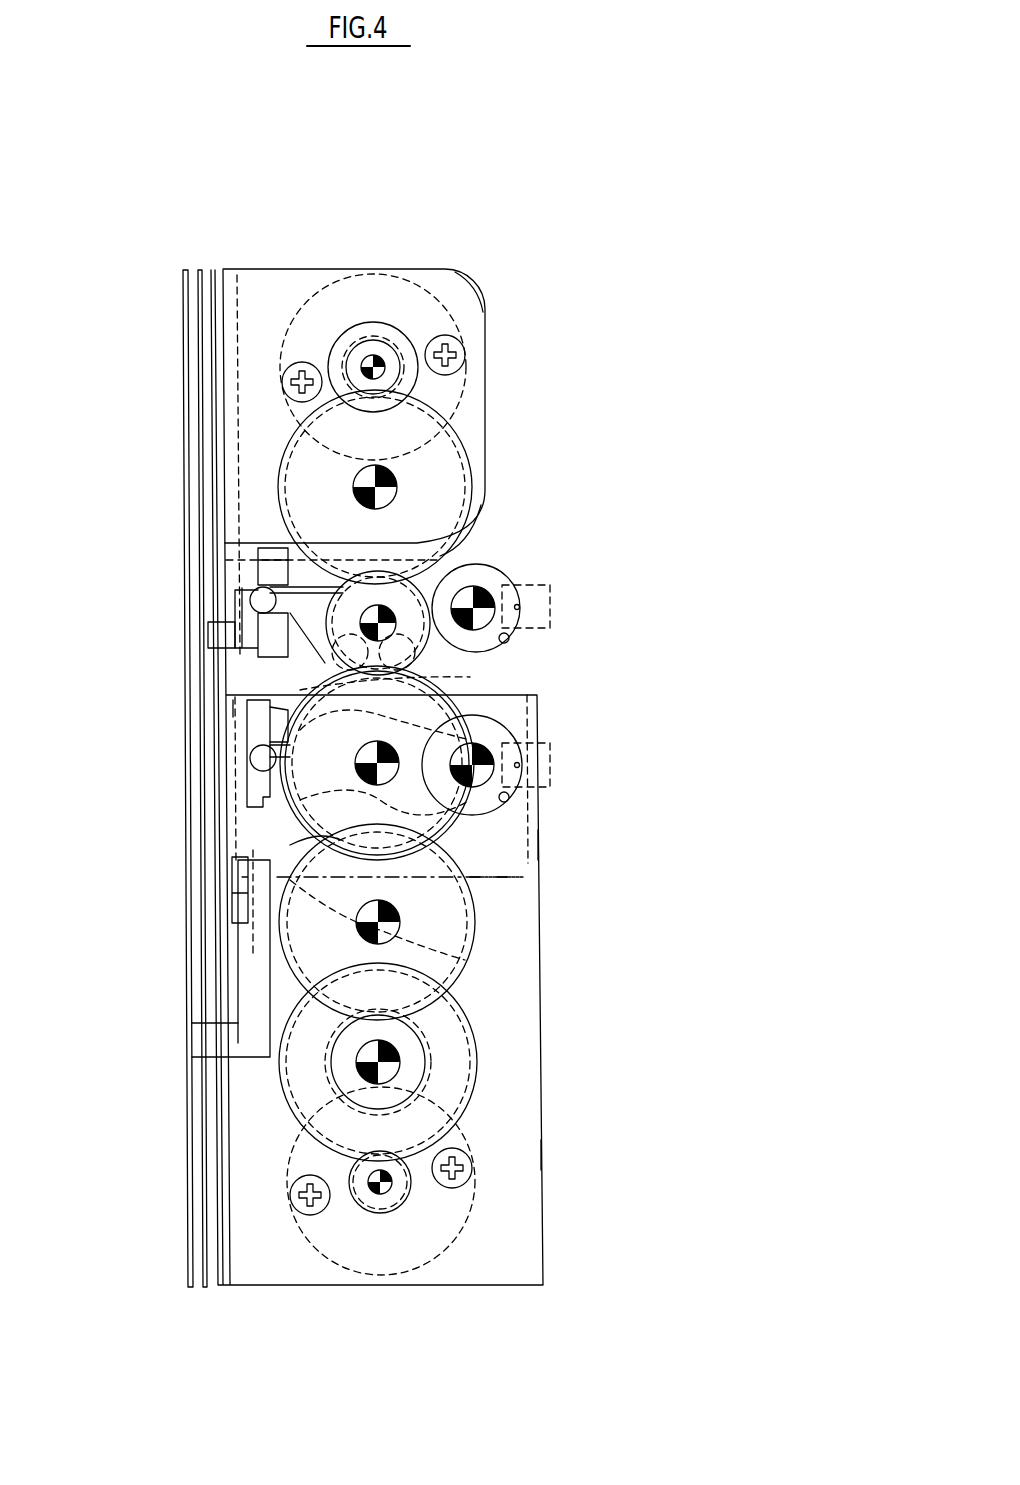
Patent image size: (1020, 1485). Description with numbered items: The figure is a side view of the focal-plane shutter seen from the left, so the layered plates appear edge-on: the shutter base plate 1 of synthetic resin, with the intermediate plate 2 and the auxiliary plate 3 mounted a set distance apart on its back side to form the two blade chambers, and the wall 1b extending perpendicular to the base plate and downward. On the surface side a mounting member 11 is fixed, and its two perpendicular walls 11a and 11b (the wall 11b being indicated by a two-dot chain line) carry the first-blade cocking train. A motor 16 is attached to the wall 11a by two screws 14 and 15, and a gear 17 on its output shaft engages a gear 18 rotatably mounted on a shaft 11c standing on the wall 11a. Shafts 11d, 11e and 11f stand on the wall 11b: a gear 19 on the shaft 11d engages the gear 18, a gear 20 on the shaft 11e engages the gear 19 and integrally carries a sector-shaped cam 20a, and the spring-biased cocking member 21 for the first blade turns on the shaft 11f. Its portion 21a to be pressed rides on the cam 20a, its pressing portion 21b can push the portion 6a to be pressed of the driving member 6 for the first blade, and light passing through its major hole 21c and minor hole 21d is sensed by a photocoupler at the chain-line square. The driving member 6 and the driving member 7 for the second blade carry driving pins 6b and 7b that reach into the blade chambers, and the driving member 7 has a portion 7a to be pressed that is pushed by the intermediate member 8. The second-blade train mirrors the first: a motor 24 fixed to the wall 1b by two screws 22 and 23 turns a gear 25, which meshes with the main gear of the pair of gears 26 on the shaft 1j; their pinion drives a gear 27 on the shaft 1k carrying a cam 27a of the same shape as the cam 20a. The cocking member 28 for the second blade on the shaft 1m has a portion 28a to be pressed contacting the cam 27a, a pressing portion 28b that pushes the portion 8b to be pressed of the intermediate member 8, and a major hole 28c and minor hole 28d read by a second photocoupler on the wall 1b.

The shutter base plate 1 is at (230, 1240).
The wall 1b is at (533, 1157).
The shaft 1j is at (400, 1077).
The shaft 1k is at (400, 928).
The shaft 1m is at (548, 762).
The intermediate plate 2 is at (200, 1190).
The auxiliary plate 3 is at (190, 1148).
The driving member for the first blade 6 is at (287, 655).
The portion to be pressed 6a is at (267, 571).
The driving pin 6b is at (207, 632).
The driving member for the second blade 7 is at (255, 980).
The portion to be pressed 7a is at (230, 930).
The driving pin 7b is at (200, 1045).
The intermediate member 8 is at (258, 782).
The portion to be pressed 8b is at (265, 733).
The mounting member 11 is at (375, 573).
The wall 11a is at (452, 283).
The wall 11b is at (557, 850).
The shaft 11c is at (388, 495).
The shaft 11d is at (504, 638).
The shaft 11e is at (500, 797).
The shaft 11f is at (480, 583).
The screw 14 is at (462, 350).
The screw 15 is at (305, 362).
The motor 16 is at (351, 300).
The gear 17 is at (376, 355).
The gear 18 is at (440, 453).
The gear 19 is at (470, 655).
The gear 20 is at (300, 815).
The cam 20a is at (470, 677).
The cocking member for the first blade 21 is at (470, 545).
The portion to be pressed 21a is at (330, 672).
The pressing portion 21b is at (262, 600).
The major hole 21c is at (548, 605).
The minor hole 21d is at (517, 607).
The screw 22 is at (467, 1147).
The screw 23 is at (303, 1210).
The motor 24 is at (462, 1220).
The gear 25 is at (385, 1198).
The pair of gears 26 is at (460, 1027).
The gear 27 is at (452, 962).
The cam 27a is at (523, 877).
The cocking member for the second blade 28 is at (493, 730).
The portion to be pressed 28a is at (290, 850).
The pressing portion 28b is at (262, 760).
The major hole 28c is at (550, 787).
The minor hole 28d is at (517, 765).